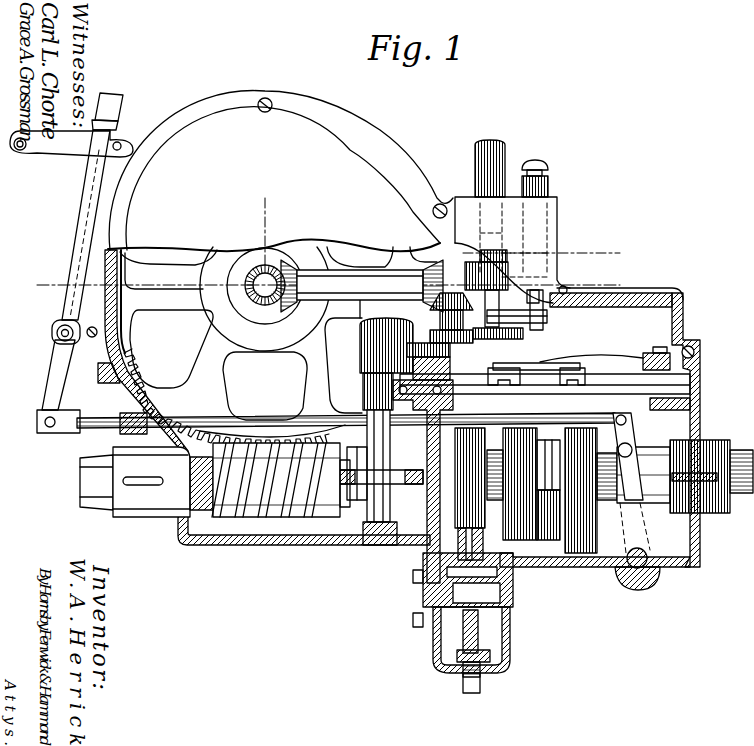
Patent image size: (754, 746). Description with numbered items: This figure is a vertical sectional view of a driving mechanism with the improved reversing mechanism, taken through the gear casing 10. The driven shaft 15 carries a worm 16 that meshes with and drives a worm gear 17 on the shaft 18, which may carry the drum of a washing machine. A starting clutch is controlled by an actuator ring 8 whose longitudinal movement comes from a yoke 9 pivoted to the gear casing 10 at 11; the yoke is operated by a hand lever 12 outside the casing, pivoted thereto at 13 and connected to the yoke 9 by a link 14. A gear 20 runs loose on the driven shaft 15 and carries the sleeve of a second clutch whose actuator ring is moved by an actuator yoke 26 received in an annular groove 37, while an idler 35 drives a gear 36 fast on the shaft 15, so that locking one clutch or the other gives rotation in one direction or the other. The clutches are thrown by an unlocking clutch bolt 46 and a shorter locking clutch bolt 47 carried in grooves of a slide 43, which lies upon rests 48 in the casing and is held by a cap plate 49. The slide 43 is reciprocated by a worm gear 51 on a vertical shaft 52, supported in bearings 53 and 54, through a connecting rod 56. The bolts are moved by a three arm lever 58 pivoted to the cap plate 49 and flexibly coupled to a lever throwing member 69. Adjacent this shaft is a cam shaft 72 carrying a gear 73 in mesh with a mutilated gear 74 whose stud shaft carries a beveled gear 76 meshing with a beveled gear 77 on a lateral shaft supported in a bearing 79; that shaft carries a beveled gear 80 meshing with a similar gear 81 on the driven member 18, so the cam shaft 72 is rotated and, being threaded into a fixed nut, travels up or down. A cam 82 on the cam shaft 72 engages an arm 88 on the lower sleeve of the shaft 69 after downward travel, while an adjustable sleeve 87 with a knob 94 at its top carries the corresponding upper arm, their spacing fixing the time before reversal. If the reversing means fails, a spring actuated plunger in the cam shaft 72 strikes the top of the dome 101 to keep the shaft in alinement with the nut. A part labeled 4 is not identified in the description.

The section line 4 is at (327, 286).
The actuator ring 8 is at (446, 222).
The yoke 9 is at (623, 496).
The gear casing 10 is at (302, 540).
The pivot 11 is at (648, 560).
The hand lever 12 is at (91, 184).
The pivot 13 is at (57, 335).
The link 14 is at (263, 420).
The driven shaft 15 is at (201, 530).
The worm 16 is at (235, 517).
The worm gear 17 is at (212, 344).
The shaft 18 is at (248, 283).
The gear 20 is at (581, 540).
The actuator yoke 26 is at (543, 463).
The idler 35 is at (483, 635).
The gear 36 is at (478, 518).
The annular grooves 37 is at (547, 525).
The slide 43 is at (720, 440).
The unlocking clutch bolt 46 is at (505, 381).
The locking clutch bolt 47 is at (580, 381).
The rests 48 is at (430, 405).
The cap plate 49 is at (615, 355).
The worm gear 51 is at (352, 500).
The vertical shaft 52 is at (416, 470).
The bearing 53 is at (400, 545).
The bearing 54 is at (368, 346).
The connecting rod 56 is at (395, 391).
The three arm lever 58 is at (535, 367).
The lever throwing member 69 is at (524, 299).
The cam shaft 72 is at (498, 262).
The gear 73 is at (510, 340).
The mutilated gear 74 is at (460, 335).
The beveled gear 76 is at (458, 300).
The beveled gear 77 is at (441, 282).
The bearing 79 is at (366, 277).
The beveled gear 80 is at (288, 262).
The beveled gear 81 is at (257, 264).
The cam 82 is at (490, 267).
The sleeve 87 is at (543, 237).
The arm 88 is at (547, 318).
The knob 94 is at (548, 165).
The dome 101 is at (500, 154).